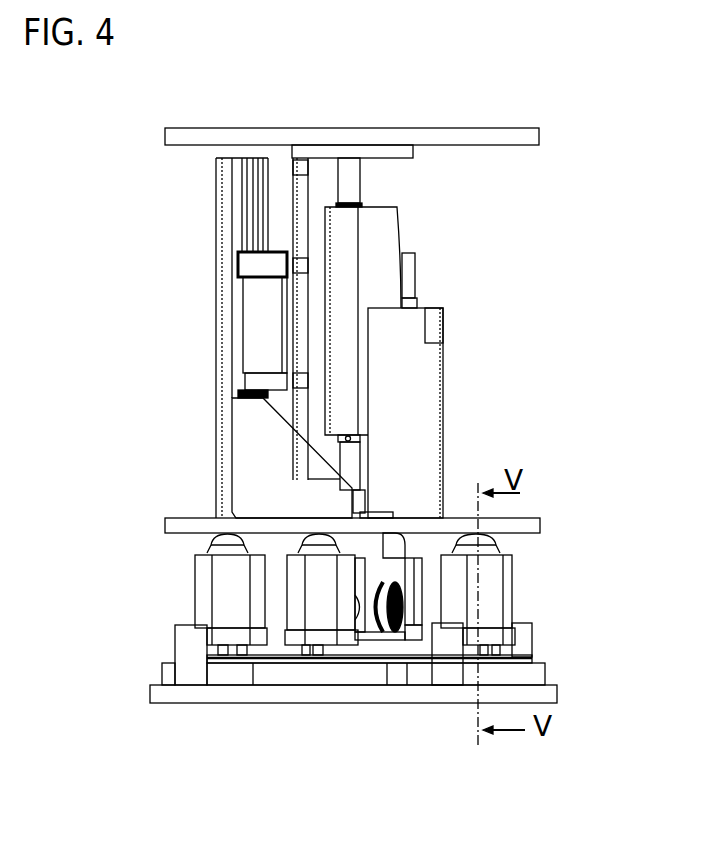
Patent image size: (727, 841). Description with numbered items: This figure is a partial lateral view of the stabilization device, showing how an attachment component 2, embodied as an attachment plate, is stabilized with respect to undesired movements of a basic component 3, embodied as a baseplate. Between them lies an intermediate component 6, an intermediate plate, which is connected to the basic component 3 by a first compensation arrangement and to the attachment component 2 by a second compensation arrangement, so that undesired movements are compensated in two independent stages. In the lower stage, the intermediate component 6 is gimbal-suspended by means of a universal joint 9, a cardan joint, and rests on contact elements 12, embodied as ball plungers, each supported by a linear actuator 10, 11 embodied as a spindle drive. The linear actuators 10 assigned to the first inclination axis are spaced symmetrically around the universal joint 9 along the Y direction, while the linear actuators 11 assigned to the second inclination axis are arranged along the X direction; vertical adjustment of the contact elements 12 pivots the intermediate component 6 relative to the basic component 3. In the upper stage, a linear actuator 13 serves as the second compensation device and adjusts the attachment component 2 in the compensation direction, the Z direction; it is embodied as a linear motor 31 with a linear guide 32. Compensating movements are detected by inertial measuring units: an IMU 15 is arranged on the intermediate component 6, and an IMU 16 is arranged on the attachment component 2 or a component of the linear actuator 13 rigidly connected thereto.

The attachment component 2 is at (165, 135).
The basic component 3 is at (152, 695).
The intermediate component 6 is at (165, 523).
The universal joint 9 is at (371, 646).
The linear actuator 10 is at (332, 608).
The linear actuator 11 is at (230, 607).
The contact element 12 is at (228, 542).
The linear actuator 13 is at (196, 281).
The inertial measuring unit 15 is at (375, 510).
The inertial measuring unit 16 is at (433, 327).
The linear motor 31 is at (381, 221).
The linear guide 32 is at (216, 229).